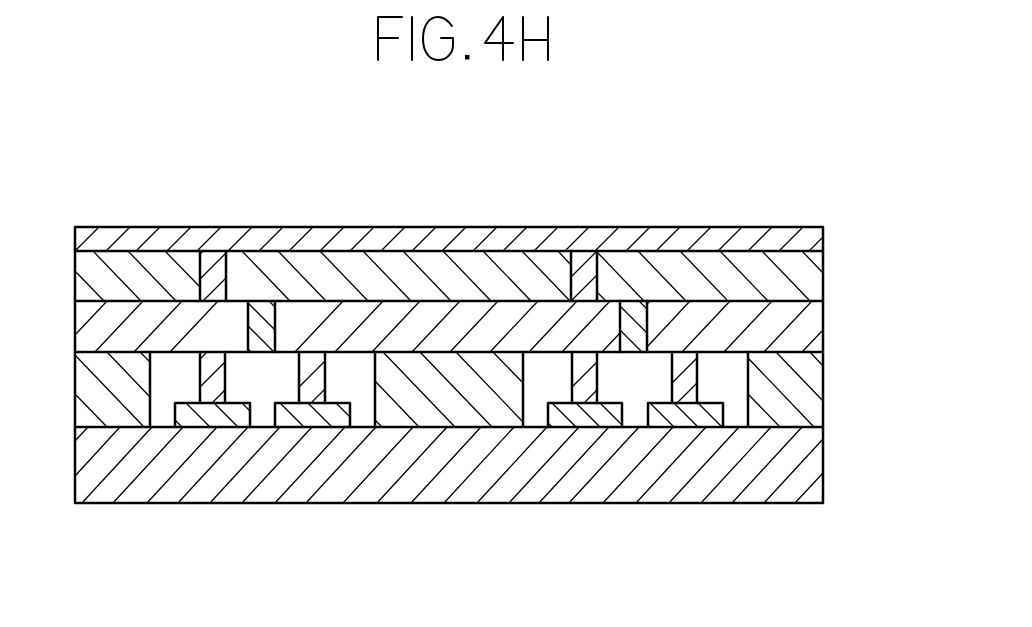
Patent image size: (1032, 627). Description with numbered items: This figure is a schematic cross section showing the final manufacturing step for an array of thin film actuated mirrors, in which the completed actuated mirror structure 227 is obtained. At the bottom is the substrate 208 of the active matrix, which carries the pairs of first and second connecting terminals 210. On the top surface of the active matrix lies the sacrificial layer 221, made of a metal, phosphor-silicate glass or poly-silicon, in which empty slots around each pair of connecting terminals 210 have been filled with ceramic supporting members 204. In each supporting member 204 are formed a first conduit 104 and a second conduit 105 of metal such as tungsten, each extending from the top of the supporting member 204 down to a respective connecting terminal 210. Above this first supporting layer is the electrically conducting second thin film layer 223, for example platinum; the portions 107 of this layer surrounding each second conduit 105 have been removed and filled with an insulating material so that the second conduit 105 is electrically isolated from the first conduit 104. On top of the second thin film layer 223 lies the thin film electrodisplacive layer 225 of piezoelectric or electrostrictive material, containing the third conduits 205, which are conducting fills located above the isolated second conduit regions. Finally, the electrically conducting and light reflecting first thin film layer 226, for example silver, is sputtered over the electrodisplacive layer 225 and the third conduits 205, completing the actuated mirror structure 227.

The actuated mirror structure 227 is at (696, 114).
The first thin film layer 226 is at (818, 235).
The thin film electrodisplacive layer 225 is at (800, 282).
The third conduit 205 is at (208, 257).
The second thin film layer 223 is at (812, 325).
The portions of the second thin film layer 107 is at (267, 310).
The sacrificial layer 221 is at (103, 403).
The second conduit 105 is at (212, 377).
The first conduit 104 is at (322, 375).
The connecting terminal 210 is at (223, 417).
The supporting member 204 is at (267, 398).
The substrate 208 is at (437, 492).